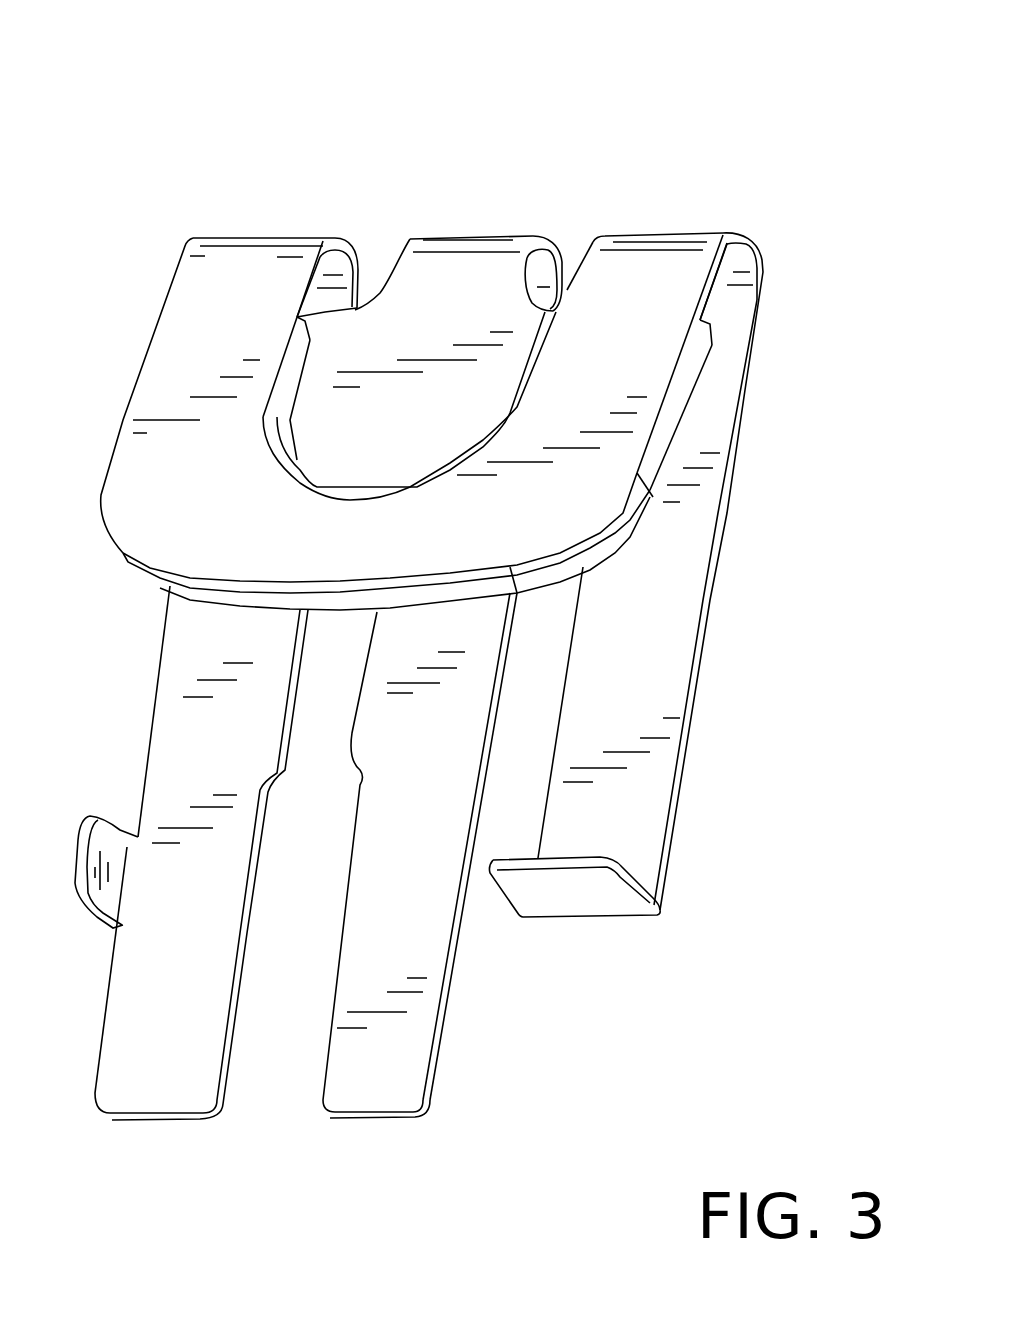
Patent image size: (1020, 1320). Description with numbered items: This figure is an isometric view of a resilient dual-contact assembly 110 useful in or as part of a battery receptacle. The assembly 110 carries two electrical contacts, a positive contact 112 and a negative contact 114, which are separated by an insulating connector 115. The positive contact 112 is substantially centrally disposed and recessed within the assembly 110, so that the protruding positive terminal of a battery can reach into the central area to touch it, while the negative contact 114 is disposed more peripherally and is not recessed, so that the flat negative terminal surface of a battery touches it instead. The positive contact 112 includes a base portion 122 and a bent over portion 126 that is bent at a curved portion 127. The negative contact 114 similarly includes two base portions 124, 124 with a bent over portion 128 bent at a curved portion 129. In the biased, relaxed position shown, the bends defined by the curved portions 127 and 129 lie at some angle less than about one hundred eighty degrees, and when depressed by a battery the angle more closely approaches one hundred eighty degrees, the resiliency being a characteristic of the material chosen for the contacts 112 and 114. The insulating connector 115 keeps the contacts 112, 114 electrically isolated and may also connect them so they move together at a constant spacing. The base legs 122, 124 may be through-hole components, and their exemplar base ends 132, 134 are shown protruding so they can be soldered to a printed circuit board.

The dual-contact assembly 110 is at (622, 80).
The positive contact 112 is at (420, 444).
The negative contact 114 is at (390, 556).
The insulating connector 115 is at (305, 342).
The base portion 122 is at (433, 827).
The base portion 124 is at (200, 957).
The bent over portion 126 is at (535, 262).
The curved portion 127 is at (526, 225).
The bent over portion 128 is at (197, 295).
The curved portion 129 is at (336, 228).
The base end 132 is at (355, 1123).
The base end 134 is at (140, 1122).